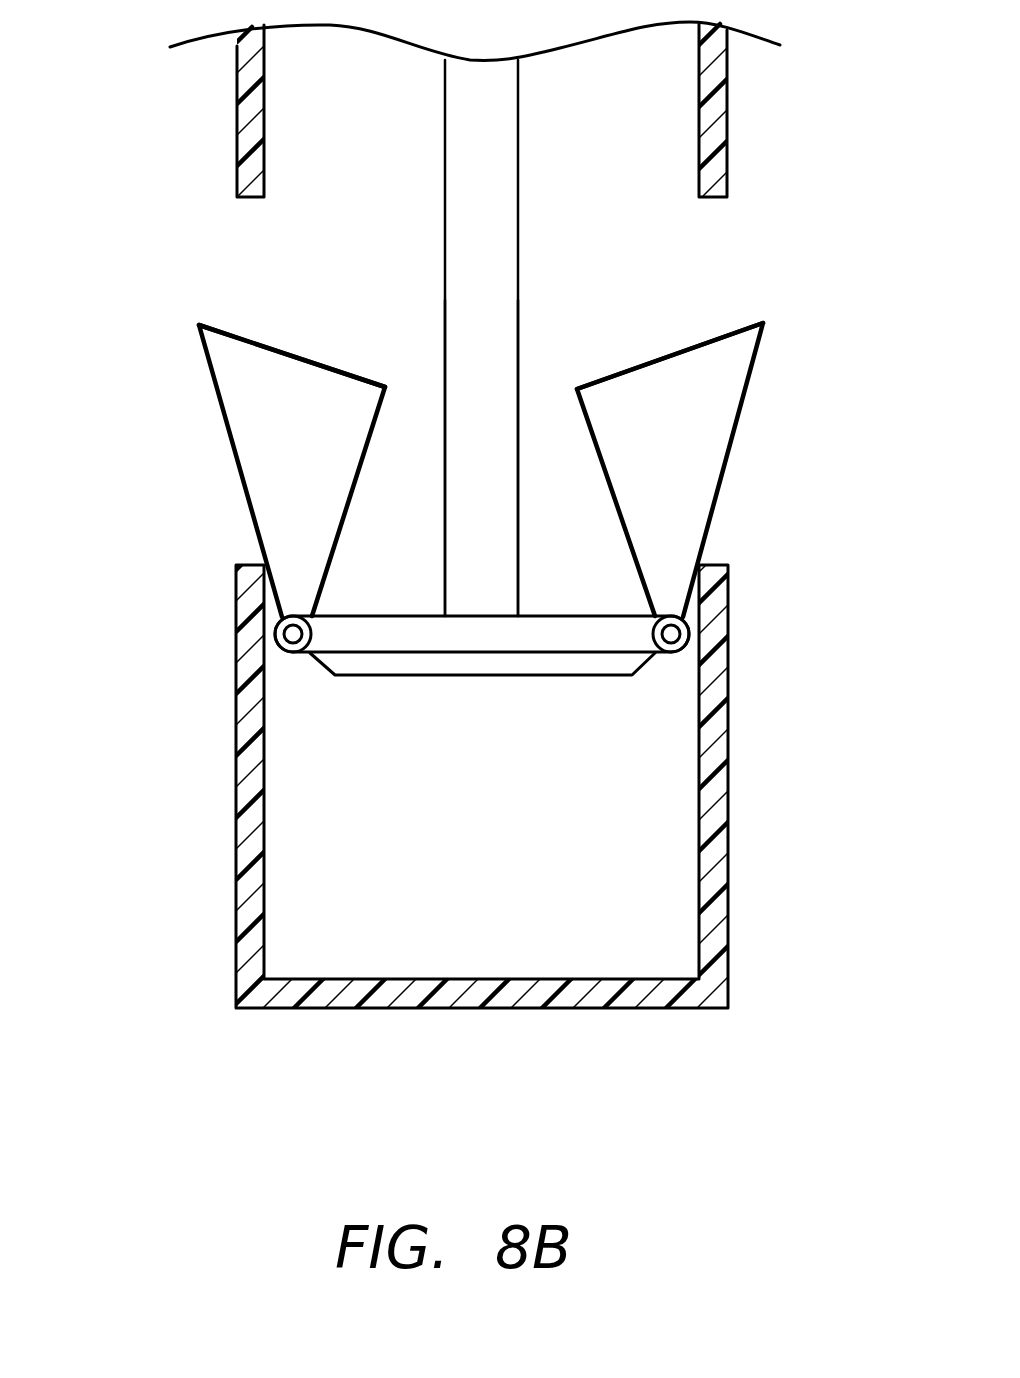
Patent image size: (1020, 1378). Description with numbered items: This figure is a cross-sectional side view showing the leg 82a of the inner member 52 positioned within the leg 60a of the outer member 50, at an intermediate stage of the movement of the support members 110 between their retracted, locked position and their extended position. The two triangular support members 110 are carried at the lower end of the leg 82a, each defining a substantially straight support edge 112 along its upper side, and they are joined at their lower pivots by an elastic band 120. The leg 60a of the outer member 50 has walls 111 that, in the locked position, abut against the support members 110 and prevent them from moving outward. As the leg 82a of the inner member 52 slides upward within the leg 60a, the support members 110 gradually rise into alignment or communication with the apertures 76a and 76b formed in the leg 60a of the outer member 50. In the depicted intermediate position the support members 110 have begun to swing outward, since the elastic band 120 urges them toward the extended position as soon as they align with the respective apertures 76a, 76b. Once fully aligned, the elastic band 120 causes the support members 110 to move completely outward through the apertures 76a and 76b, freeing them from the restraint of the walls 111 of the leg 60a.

The outer member 50 is at (236, 113).
The inner member 52 is at (440, 126).
The leg of the outer member 60a is at (730, 125).
The aperture 76a is at (292, 222).
The aperture 76b is at (746, 213).
The leg of the inner member 82a is at (503, 222).
The support member 110 is at (265, 423).
The wall 111 is at (236, 672).
The support edge 112 is at (272, 348).
The elastic band 120 is at (452, 677).